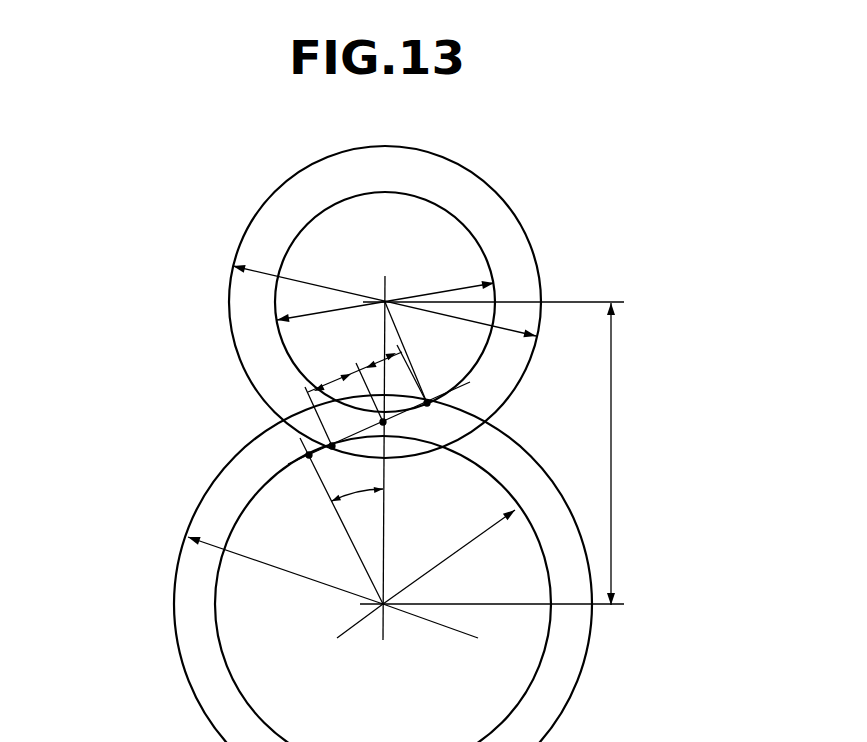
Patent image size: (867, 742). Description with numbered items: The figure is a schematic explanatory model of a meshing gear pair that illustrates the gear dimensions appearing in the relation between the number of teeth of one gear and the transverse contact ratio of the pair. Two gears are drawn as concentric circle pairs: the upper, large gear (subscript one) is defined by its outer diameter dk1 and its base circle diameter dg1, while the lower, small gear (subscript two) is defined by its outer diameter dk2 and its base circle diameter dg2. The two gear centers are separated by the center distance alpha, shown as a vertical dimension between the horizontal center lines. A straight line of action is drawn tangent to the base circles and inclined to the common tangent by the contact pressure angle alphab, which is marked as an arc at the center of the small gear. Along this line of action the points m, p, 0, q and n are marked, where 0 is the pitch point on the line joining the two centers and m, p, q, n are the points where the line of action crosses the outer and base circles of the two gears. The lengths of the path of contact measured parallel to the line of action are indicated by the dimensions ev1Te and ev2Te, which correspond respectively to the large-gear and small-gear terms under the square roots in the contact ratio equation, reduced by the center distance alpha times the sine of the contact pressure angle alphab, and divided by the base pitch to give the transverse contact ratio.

The base circle diameter of large gear dg1 is at (385, 311).
The outer diameter of large gear dk1 is at (384, 306).
The base circle diameter of small gear dg2 is at (449, 557).
The outer diameter of small gear dk2 is at (285, 570).
The center distance alpha is at (618, 454).
The contact pressure angle alphab is at (358, 507).
The transverse contact ratio portion of large gear ev1Te is at (266, 370).
The transverse contact ratio portion of small gear ev2Te is at (253, 347).
The end point of path of contact m is at (374, 493).
The end point of path of contact n is at (414, 354).
The point on line of action p is at (326, 418).
The point on line of action q is at (428, 421).
The pitch point 0 is at (382, 400).